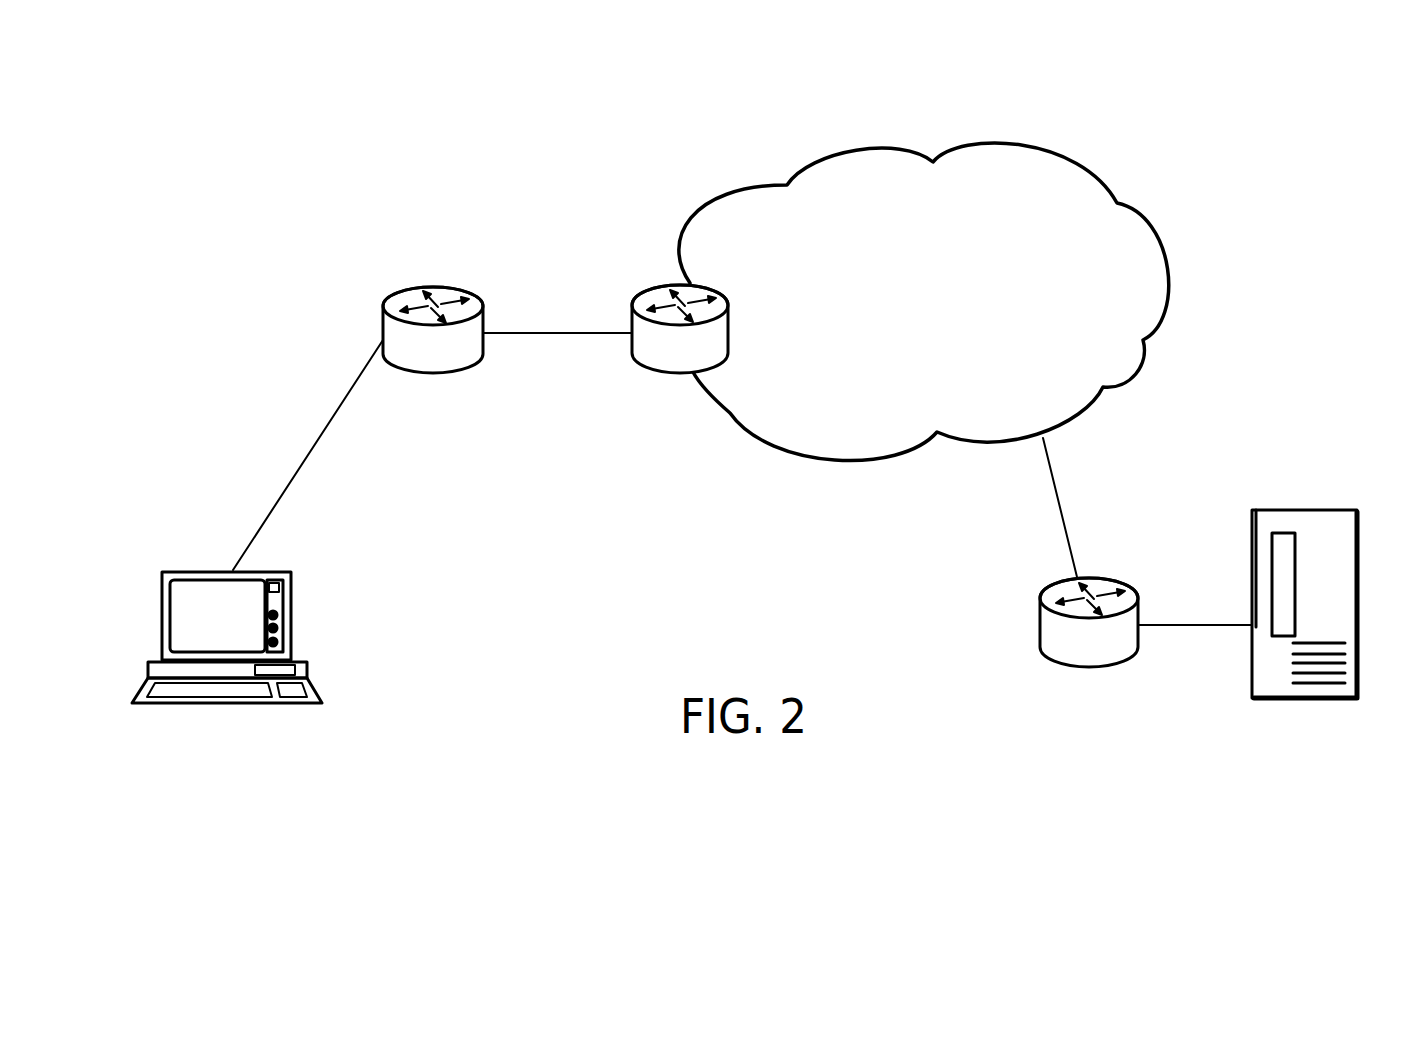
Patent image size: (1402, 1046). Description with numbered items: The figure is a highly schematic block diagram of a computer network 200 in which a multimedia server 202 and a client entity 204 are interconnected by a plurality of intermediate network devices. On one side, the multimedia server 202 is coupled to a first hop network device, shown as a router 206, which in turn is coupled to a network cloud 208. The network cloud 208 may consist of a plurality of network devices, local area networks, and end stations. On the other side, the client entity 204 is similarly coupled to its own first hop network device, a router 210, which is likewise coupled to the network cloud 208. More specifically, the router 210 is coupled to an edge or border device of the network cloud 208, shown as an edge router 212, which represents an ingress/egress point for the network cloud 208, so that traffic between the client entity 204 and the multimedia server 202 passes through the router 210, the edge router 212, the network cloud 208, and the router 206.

The computer network 200 is at (1212, 92).
The multimedia server 202 is at (1283, 510).
The client entity 204 is at (293, 612).
The router 206 is at (1100, 578).
The network cloud 208 is at (1047, 148).
The router 210 is at (436, 375).
The edge router 212 is at (655, 374).